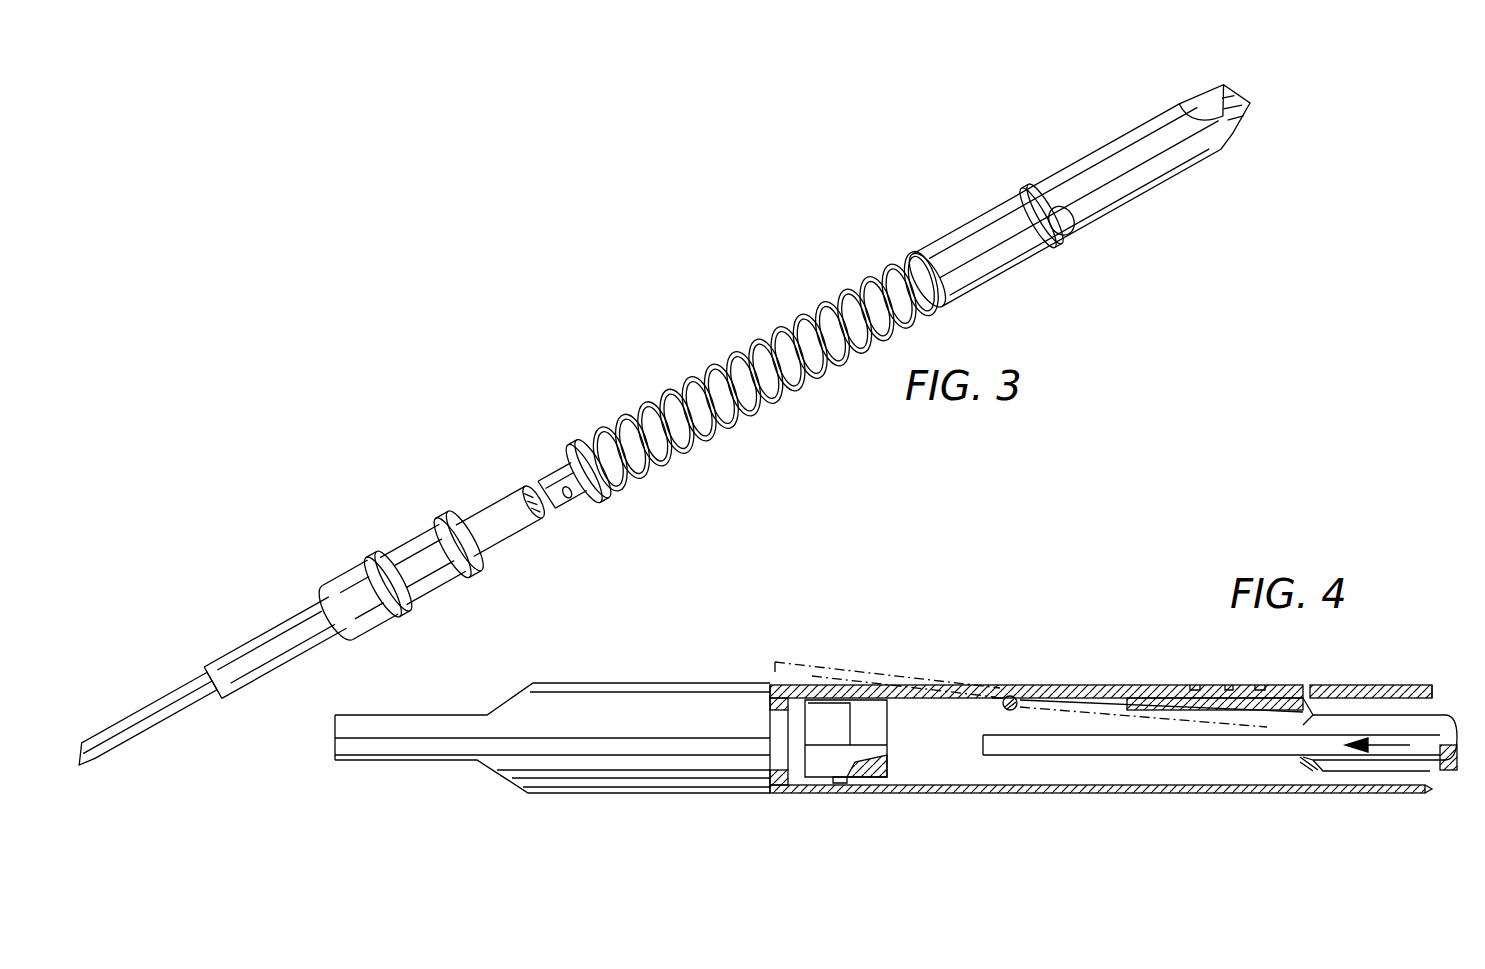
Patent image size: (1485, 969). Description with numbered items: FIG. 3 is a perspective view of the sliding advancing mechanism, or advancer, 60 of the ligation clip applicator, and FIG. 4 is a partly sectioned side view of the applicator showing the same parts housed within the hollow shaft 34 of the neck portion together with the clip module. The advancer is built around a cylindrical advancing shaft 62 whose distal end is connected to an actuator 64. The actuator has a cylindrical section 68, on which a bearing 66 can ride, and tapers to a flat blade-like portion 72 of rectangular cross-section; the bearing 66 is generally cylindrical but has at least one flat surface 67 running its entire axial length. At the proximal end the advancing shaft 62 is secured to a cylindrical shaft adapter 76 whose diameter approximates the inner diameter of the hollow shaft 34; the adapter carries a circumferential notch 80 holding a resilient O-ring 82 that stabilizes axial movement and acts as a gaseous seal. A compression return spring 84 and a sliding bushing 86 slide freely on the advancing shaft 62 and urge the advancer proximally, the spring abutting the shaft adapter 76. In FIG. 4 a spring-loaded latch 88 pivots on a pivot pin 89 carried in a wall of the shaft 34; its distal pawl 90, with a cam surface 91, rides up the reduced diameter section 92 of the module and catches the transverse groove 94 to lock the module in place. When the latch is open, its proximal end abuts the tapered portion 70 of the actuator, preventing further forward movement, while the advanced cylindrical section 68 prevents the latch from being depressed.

In FIG. 4, the hollow shaft 34 is at (1010, 793).
In FIG. 3, the drive assembly 60 is at (813, 302).
In FIG. 3, the cylindrical advancing shaft 62 is at (549, 474).
In FIG. 3, the actuator 64 is at (262, 634).
In FIG. 4, the actuator 64 is at (1357, 717).
In FIG. 3, the bearing 66 is at (334, 573).
In FIG. 3, the flat surface 67 is at (372, 618).
In FIG. 3, the cylindrical section 68 is at (303, 658).
In FIG. 4, the cylindrical section 68 is at (1345, 775).
In FIG. 4, the tapered portion 70 is at (1305, 762).
In FIG. 3, the flat blade-like portion 72 is at (152, 733).
In FIG. 4, the flat blade-like portion 72 is at (1168, 755).
In FIG. 3, the cylindrical shaft adapter 76 is at (933, 243).
In FIG. 3, the circumferential notch 80 is at (1040, 246).
In FIG. 3, the resilient O-ring 82 is at (1076, 233).
In FIG. 3, the compression return spring 84 is at (703, 375).
In FIG. 3, the sliding bushing 86 is at (443, 516).
In FIG. 4, the spring-loaded latch 88 is at (1152, 686).
In FIG. 4, the pivot pin 89 is at (1013, 698).
In FIG. 4, the pawl 90 is at (812, 707).
In FIG. 4, the cam surface 91 is at (775, 668).
In FIG. 4, the reduced diameter section 92 is at (890, 726).
In FIG. 4, the transverse groove 94 is at (810, 762).